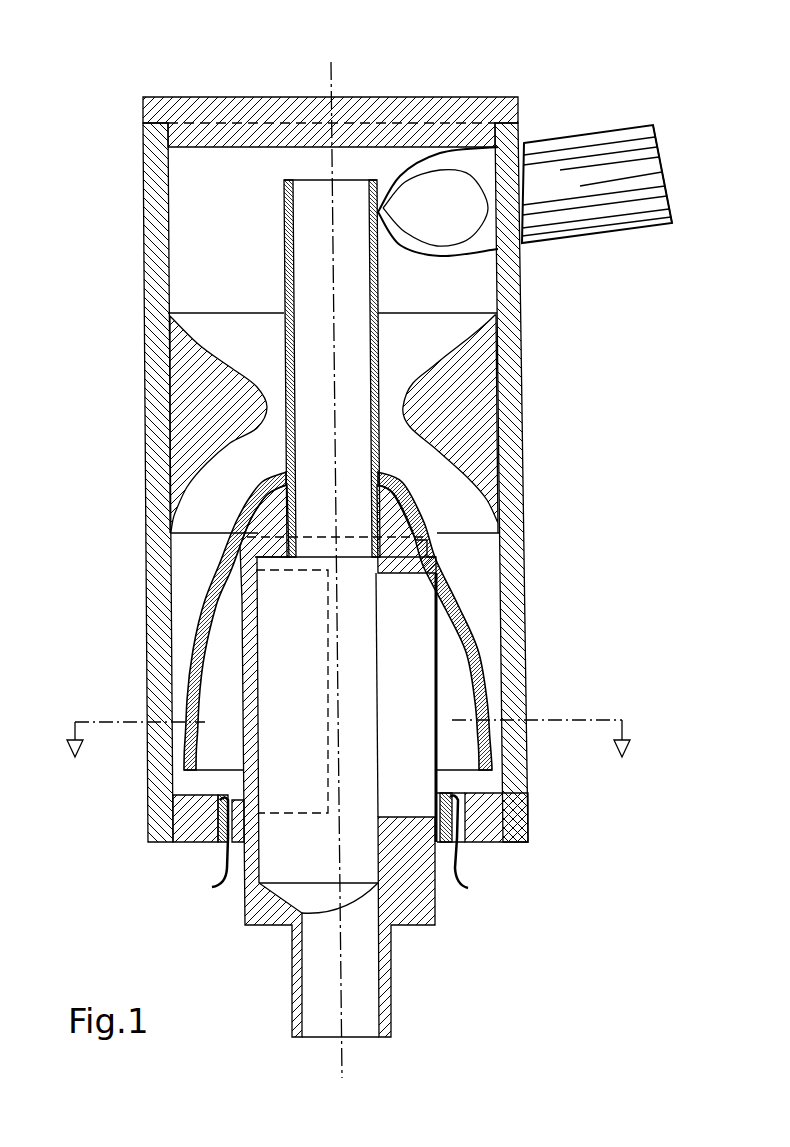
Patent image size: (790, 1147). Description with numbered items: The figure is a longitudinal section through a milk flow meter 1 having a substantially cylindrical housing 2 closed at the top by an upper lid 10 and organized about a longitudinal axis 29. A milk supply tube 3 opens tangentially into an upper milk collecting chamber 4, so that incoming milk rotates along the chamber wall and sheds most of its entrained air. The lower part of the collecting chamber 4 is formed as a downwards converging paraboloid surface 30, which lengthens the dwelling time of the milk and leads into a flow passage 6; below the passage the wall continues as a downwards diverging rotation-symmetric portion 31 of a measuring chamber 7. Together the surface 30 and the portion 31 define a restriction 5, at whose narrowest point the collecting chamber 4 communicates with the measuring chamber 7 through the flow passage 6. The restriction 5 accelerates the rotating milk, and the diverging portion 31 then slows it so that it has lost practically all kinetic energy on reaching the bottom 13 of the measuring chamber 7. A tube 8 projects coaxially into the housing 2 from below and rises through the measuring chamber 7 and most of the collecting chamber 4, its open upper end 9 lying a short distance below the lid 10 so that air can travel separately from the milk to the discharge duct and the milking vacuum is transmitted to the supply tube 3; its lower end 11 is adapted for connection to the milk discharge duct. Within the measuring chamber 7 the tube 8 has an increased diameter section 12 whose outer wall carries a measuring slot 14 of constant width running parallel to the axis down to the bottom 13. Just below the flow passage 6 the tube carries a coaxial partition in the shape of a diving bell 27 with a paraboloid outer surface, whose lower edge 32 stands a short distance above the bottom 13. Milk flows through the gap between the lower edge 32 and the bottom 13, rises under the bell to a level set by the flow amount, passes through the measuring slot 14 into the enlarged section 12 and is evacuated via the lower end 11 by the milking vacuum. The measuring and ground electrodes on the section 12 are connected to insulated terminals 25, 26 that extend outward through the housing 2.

The milk flow meter 1 is at (490, 83).
The housing 2 is at (507, 362).
The milk supply tube 3 is at (630, 232).
The milk collecting chamber 4 is at (230, 262).
The restriction 5 is at (453, 402).
The flow passage 6 is at (398, 370).
The measuring chamber 7 is at (493, 574).
The tube 8 is at (377, 280).
The open upper end 9 is at (343, 180).
The upper lid 10 is at (205, 100).
The lower end 11 is at (392, 993).
The increased diameter section 12 is at (287, 630).
The bottom 13 is at (527, 828).
The measuring slot 14 is at (375, 718).
The insulated terminal 25 is at (222, 872).
The insulated terminal 26 is at (463, 876).
The diving bell 27 is at (482, 652).
The longitudinal axis 29 is at (330, 80).
The paraboloid surface 30 is at (200, 347).
The rotation-symmetric portion 31 is at (200, 475).
The lower edge 32 is at (478, 792).